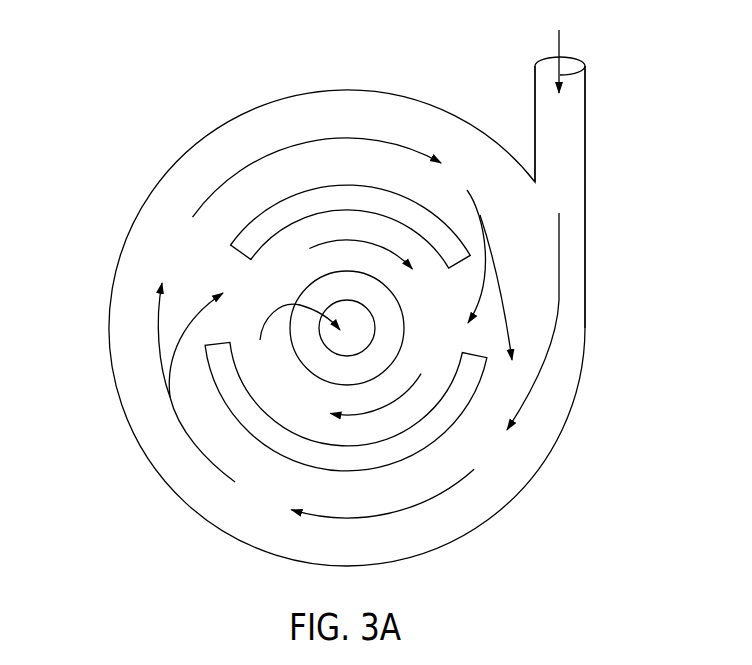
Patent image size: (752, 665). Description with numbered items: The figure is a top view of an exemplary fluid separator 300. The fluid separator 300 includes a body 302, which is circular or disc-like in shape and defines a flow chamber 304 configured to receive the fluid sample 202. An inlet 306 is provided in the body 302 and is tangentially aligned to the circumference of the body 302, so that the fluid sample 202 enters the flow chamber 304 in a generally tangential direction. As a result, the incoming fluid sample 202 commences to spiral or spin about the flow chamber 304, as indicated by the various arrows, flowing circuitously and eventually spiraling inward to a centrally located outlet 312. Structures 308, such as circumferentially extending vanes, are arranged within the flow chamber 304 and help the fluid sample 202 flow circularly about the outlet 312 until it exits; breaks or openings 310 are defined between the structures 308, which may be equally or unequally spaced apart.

The fluid separator 300 is at (431, 36).
The body 302 is at (178, 157).
The flow chamber 304 is at (127, 350).
The inlet 306 is at (568, 180).
The structures 308 is at (425, 207).
The openings 310 is at (247, 250).
The outlet 312 is at (350, 302).
The fluid sample 202 is at (560, 43).